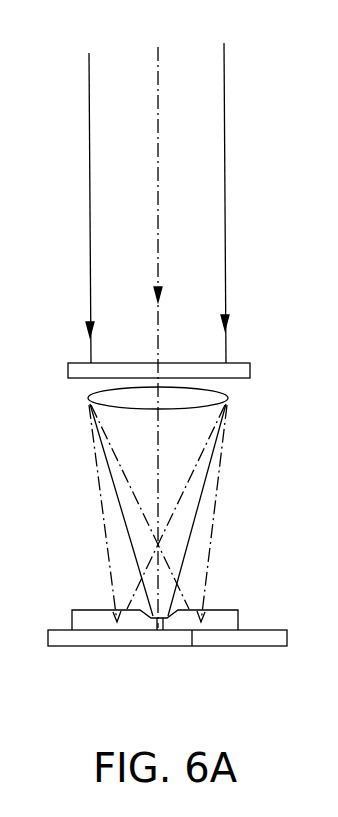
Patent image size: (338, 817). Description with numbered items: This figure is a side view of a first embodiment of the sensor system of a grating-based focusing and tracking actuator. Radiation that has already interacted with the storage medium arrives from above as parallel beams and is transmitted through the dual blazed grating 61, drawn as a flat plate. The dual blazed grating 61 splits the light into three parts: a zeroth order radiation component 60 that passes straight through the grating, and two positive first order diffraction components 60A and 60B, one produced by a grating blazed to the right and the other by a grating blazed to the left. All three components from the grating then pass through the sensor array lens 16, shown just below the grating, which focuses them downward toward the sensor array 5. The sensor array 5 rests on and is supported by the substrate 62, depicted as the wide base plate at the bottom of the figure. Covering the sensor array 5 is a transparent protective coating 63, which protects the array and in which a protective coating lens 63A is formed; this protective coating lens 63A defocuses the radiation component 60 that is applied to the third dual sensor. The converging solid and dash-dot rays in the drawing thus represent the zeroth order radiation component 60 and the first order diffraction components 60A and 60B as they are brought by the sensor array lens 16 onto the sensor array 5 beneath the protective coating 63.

The dual blazed grating 61 is at (251, 371).
The sensor array lens 16 is at (229, 398).
The radiation component 60 is at (208, 482).
The first order diffraction component 60A is at (105, 548).
The first order diffraction component 60B is at (213, 537).
The transparent protective coating 63 is at (238, 616).
The protective coating lens 63A is at (146, 611).
The substrate 62 is at (273, 647).
The sensor array 5 is at (192, 646).